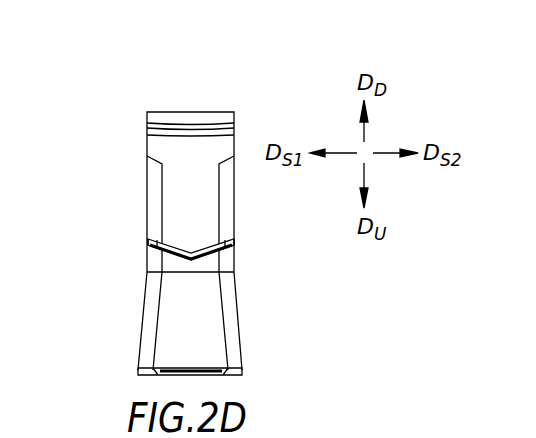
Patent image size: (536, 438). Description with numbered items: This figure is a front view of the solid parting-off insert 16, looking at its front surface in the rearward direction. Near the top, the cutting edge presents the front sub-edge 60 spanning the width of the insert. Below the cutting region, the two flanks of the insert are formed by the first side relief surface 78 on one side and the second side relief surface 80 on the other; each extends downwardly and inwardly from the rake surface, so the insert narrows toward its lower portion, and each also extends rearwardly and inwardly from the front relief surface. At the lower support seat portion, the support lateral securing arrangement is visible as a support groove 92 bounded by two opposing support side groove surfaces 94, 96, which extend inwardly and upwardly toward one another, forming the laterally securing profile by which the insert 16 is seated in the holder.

The solid parting-off insert 16 is at (135, 82).
The front sub-edge 60 is at (188, 370).
The first side relief surface 78 is at (143, 318).
The second side relief surface 80 is at (237, 327).
The support groove 92 is at (191, 247).
The support side groove surface 94 is at (208, 246).
The support side groove surface 96 is at (170, 247).